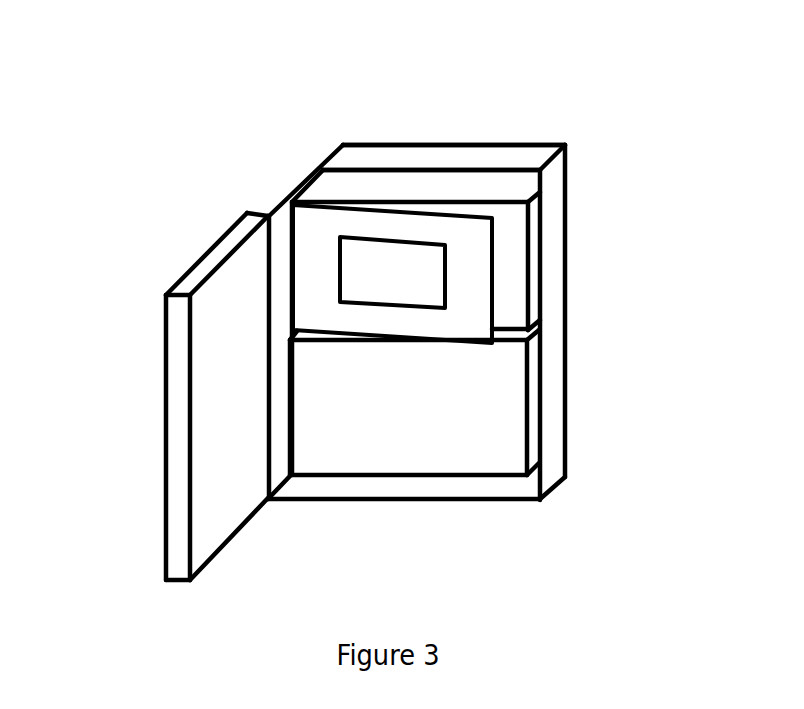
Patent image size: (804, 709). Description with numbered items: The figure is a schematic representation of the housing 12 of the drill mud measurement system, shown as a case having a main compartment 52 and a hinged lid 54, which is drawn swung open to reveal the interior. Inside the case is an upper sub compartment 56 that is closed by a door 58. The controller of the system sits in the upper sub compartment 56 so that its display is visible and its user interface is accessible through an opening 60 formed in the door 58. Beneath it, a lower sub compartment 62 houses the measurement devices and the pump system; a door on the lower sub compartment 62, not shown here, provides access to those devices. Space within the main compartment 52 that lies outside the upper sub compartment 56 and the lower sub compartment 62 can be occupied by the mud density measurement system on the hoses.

The housing 12 is at (132, 424).
The main compartment 52 is at (507, 143).
The hinged lid 54 is at (185, 506).
The upper sub compartment 56 is at (423, 133).
The door 58 is at (363, 225).
The opening 60 is at (387, 268).
The lower sub compartment 62 is at (528, 408).